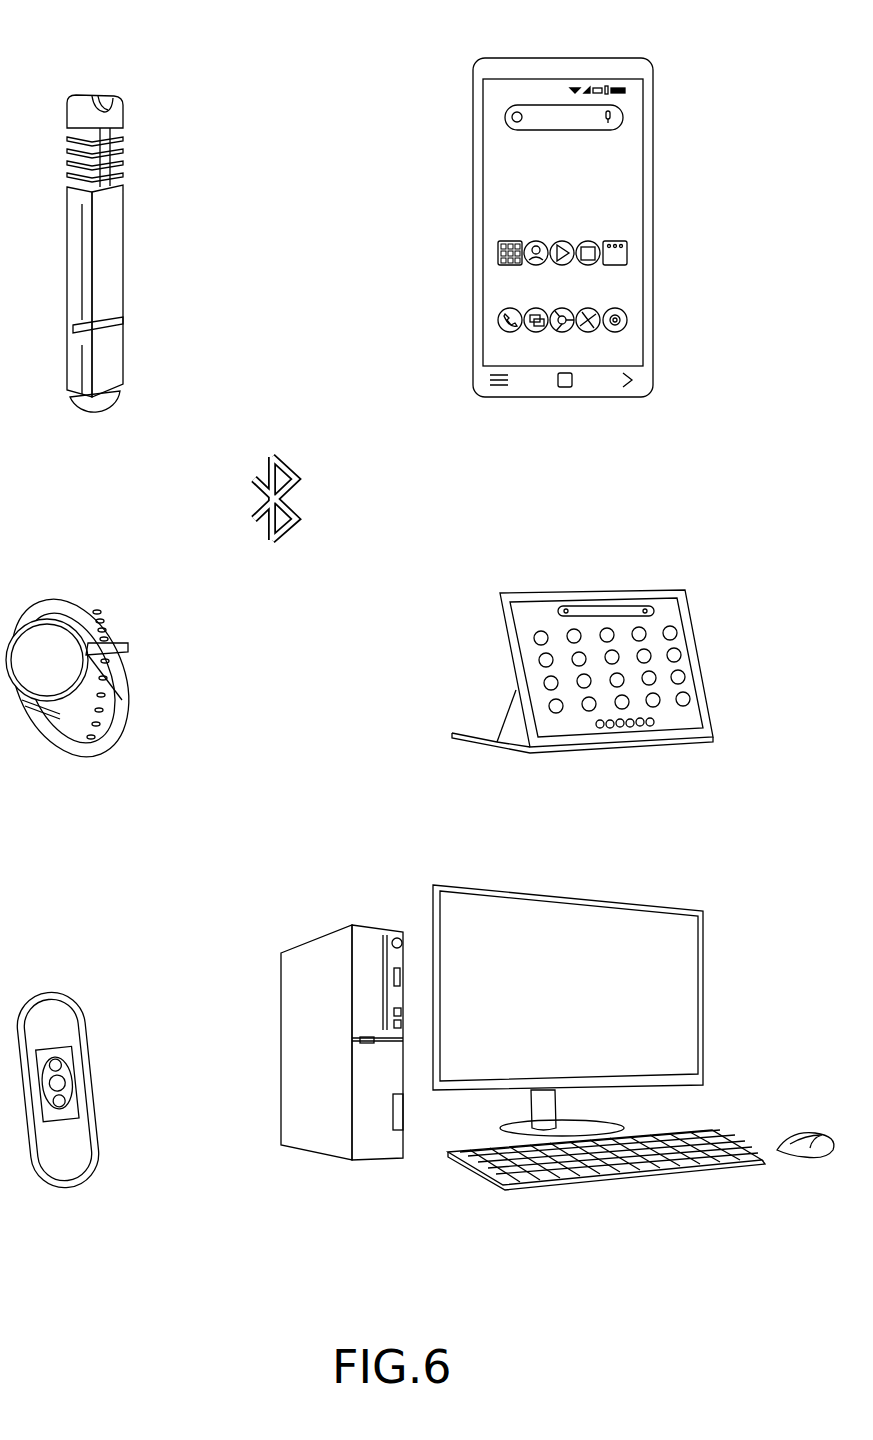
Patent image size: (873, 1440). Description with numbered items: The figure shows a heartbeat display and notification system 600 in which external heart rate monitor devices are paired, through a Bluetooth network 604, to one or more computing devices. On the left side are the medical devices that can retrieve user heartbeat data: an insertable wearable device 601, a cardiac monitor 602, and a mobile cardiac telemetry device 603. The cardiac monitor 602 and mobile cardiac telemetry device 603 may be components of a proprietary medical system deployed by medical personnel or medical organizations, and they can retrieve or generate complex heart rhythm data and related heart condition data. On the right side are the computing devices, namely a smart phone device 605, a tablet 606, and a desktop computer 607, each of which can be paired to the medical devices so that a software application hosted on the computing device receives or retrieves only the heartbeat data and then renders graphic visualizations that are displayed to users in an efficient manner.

The heartbeat display and notification system 600 is at (145, 38).
The insertable wearable device 601 is at (115, 740).
The cardiac monitor 602 is at (100, 418).
The mobile cardiac telemetry device 603 is at (48, 1192).
The Bluetooth network 604 is at (274, 540).
The smart phone device 605 is at (653, 288).
The tablet 606 is at (706, 665).
The desktop computer 607 is at (703, 948).